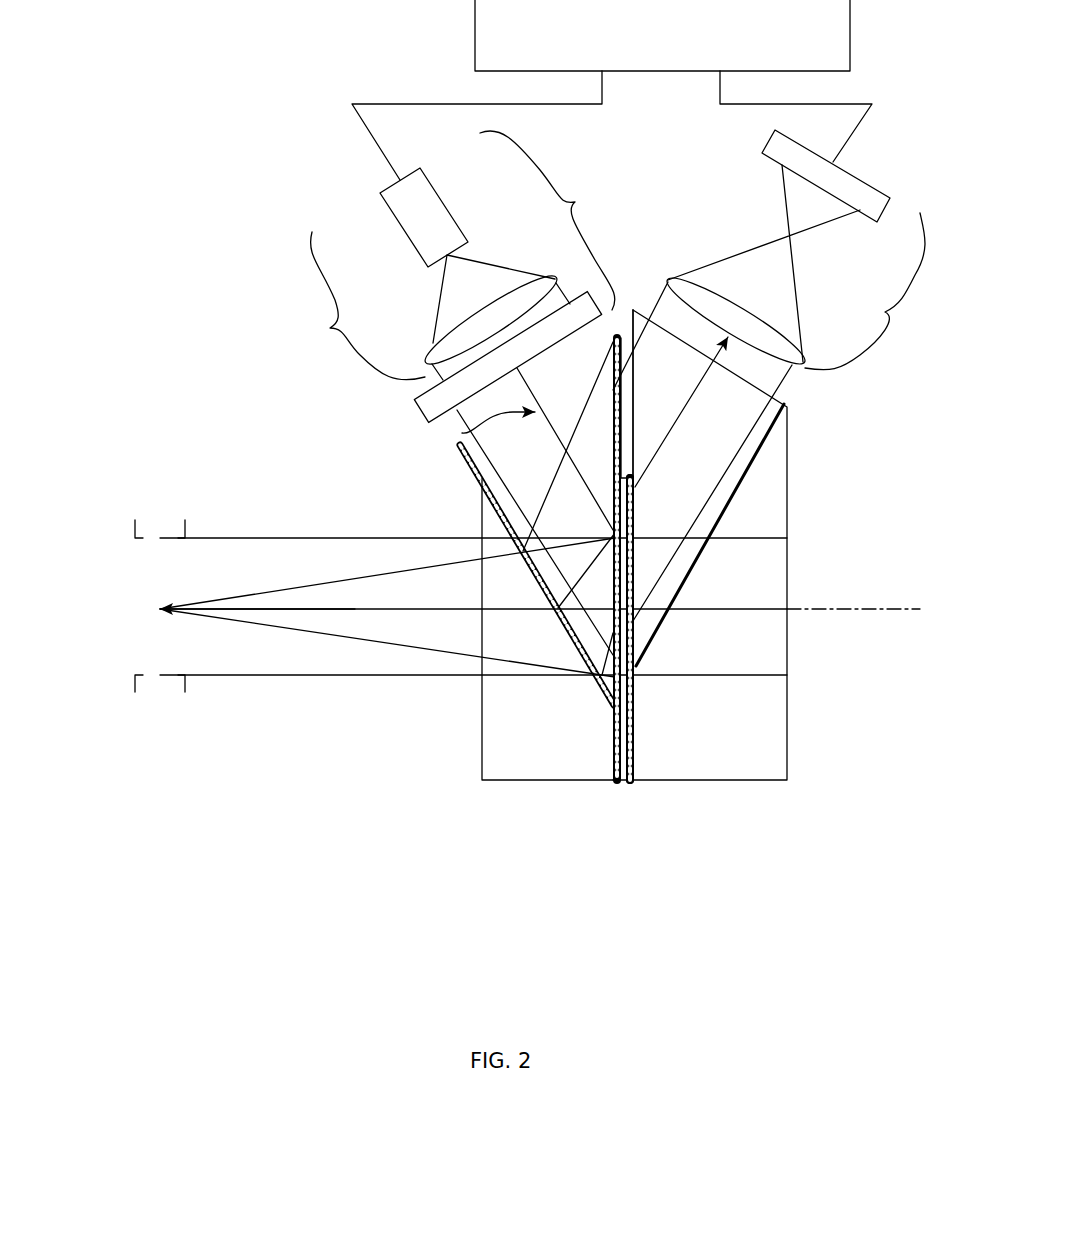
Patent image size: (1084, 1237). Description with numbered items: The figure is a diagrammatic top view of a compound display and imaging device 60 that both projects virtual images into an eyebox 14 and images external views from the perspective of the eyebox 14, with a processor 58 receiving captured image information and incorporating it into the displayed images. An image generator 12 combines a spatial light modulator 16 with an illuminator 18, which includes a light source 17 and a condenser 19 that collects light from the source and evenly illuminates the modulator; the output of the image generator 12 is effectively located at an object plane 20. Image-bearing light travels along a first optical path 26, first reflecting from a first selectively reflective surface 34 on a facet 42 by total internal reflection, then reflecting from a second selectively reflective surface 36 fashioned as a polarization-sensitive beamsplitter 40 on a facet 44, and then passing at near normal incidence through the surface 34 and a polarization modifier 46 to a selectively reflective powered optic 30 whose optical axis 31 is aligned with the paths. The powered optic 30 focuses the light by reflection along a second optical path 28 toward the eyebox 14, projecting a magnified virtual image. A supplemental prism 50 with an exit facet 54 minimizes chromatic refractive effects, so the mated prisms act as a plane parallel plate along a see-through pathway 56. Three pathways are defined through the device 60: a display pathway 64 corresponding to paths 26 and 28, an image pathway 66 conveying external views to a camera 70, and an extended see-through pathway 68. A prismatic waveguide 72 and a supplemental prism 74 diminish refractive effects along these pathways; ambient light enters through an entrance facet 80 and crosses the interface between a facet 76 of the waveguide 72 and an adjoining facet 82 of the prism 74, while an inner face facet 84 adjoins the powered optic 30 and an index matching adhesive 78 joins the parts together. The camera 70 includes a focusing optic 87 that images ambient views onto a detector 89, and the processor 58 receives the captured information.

The image generator 12 is at (547, 220).
The eyebox 14 is at (160, 538).
The spatial light modulator 16 is at (415, 400).
The light source 17 is at (383, 207).
The illuminator 18 is at (355, 306).
The condenser 19 is at (548, 276).
The object plane 20 is at (457, 408).
The first optical path 26 is at (570, 448).
The second optical path 28 is at (357, 607).
The selectively reflective powered optic 30 is at (637, 712).
The optical axis 31 is at (856, 612).
The first selectively reflective surface 34 is at (620, 430).
The second selectively reflective surface 36 is at (485, 545).
The polarization-sensitive beamsplitter 40 is at (603, 685).
The facet 42 is at (665, 611).
The facet 44 is at (613, 538).
The polarization modifier 46 is at (637, 782).
The supplemental prism 50 is at (553, 784).
The exit facet 54 is at (481, 690).
The see-through pathway 56 is at (240, 604).
The processor 58 is at (662, 35).
The compound display and imaging device 60 is at (268, 255).
The display pathway 64 is at (462, 443).
The image pathway 66 is at (704, 394).
The see-through pathway 68 is at (699, 610).
The camera 70 is at (865, 291).
The prismatic waveguide 72 is at (790, 410).
The supplemental prism 74 is at (746, 784).
The facet 76 is at (725, 515).
The index matching adhesive 78 is at (625, 338).
The entrance facet 80 is at (790, 718).
The adjoining facet 82 is at (690, 560).
The inner face facet 84 is at (635, 402).
The focusing optic 87 is at (673, 280).
The detector 89 is at (762, 150).